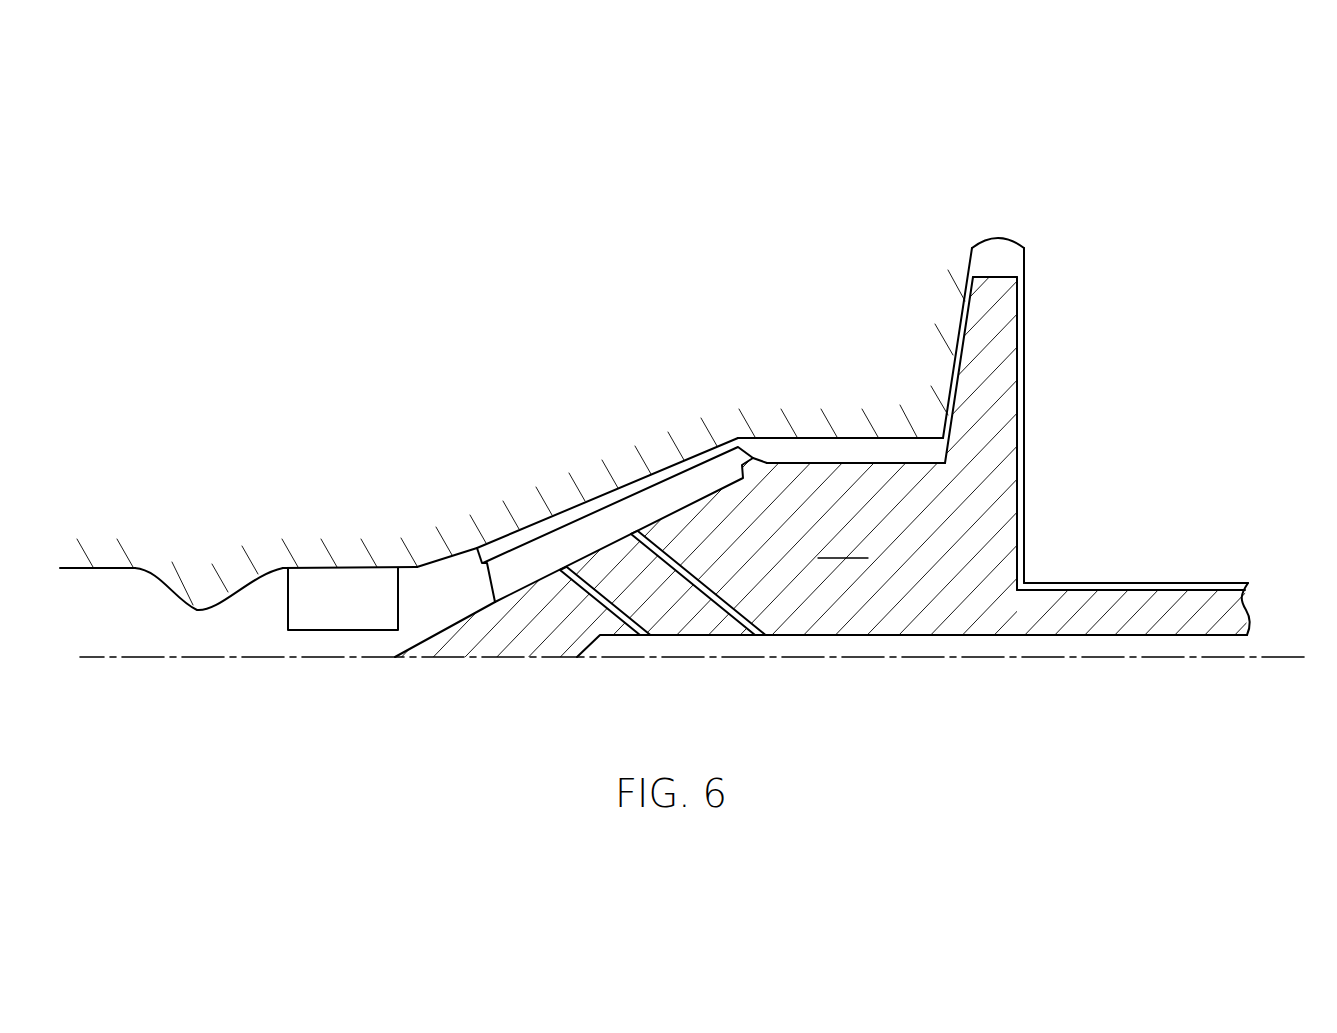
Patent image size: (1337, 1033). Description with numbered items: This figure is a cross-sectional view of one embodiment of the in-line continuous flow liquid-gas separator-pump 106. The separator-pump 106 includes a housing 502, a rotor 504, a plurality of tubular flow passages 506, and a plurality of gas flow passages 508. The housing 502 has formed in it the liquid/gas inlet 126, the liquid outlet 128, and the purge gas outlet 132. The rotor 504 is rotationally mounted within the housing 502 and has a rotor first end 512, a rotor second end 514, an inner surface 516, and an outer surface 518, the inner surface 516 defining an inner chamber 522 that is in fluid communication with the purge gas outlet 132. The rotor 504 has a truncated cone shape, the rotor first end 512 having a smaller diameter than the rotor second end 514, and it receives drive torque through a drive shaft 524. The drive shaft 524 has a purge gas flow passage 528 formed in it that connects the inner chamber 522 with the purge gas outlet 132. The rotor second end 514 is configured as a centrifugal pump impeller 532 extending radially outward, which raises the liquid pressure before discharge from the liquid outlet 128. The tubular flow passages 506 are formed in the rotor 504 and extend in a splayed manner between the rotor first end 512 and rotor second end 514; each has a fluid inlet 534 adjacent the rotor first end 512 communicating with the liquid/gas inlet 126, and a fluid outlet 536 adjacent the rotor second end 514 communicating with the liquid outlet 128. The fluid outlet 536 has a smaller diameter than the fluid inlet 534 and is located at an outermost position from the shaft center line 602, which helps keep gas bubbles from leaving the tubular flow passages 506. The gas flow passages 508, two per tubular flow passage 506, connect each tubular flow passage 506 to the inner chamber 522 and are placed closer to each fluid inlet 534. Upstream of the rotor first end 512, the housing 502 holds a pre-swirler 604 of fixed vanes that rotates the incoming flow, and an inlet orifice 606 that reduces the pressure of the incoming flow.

The in-line continuous flow liquid-gas separator-pump 106 is at (436, 352).
The liquid/gas inlet 126 is at (122, 638).
The liquid outlet 128 is at (997, 248).
The purge gas outlet 132 is at (1242, 647).
The housing 502 is at (763, 428).
The rotor 504 is at (833, 485).
The tubular flow passages 506 is at (656, 503).
The gas flow passages 508 is at (638, 531).
The rotor first end 512 is at (393, 658).
The rotor second end 514 is at (1019, 468).
The inner surface 516 is at (838, 636).
The outer surface 518 is at (497, 530).
The inner chamber 522 is at (1007, 700).
The drive shaft 524 is at (1163, 600).
The purge gas flow passage 528 is at (1147, 640).
The centrifugal pump impeller 532 is at (1005, 347).
The fluid inlet 534 is at (488, 584).
The fluid outlet 536 is at (752, 458).
The shaft center line 602 is at (755, 658).
The pre-swirler 604 is at (328, 623).
The inlet orifice 606 is at (197, 611).